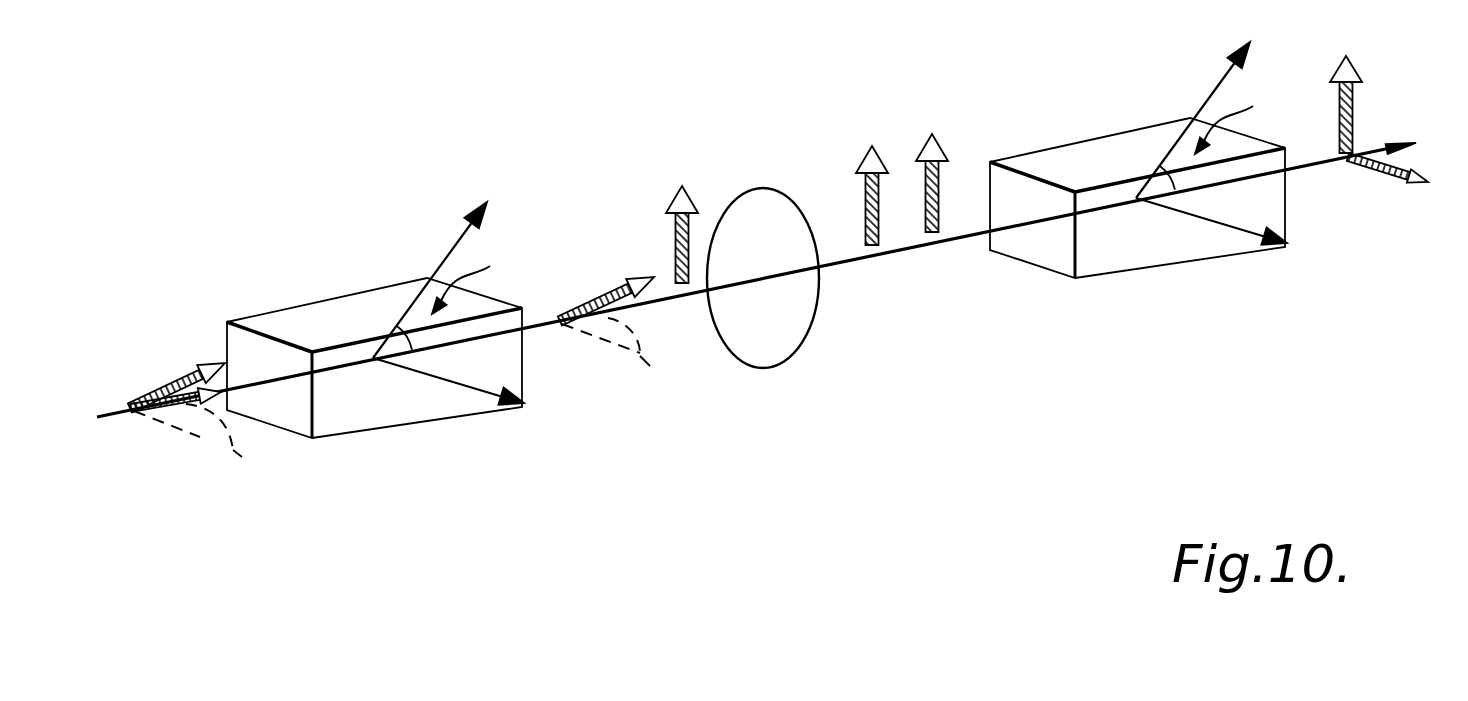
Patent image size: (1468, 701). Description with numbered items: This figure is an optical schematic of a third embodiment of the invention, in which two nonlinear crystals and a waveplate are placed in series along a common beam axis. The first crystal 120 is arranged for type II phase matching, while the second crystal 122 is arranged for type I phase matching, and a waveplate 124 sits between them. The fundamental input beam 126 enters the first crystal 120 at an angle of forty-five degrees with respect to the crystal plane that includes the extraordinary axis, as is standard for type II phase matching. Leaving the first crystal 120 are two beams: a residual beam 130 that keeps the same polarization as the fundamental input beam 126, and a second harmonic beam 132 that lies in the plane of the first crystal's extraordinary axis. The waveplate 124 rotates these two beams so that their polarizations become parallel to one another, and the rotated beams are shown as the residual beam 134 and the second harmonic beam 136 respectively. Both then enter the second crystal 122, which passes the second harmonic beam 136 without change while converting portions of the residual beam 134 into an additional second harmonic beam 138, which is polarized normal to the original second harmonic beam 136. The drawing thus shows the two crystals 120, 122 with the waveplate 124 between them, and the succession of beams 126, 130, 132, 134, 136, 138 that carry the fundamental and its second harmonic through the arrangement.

The first crystal 120 is at (330, 297).
The second crystal 122 is at (1107, 133).
The waveplate 124 is at (812, 327).
The fundamental input beam 126 is at (172, 383).
The residual beam 130 is at (587, 297).
The second harmonic beam 132 is at (673, 247).
The residual beam 134 is at (862, 207).
The second harmonic beam 136 is at (940, 180).
The additional second harmonic beam 138 is at (1373, 173).